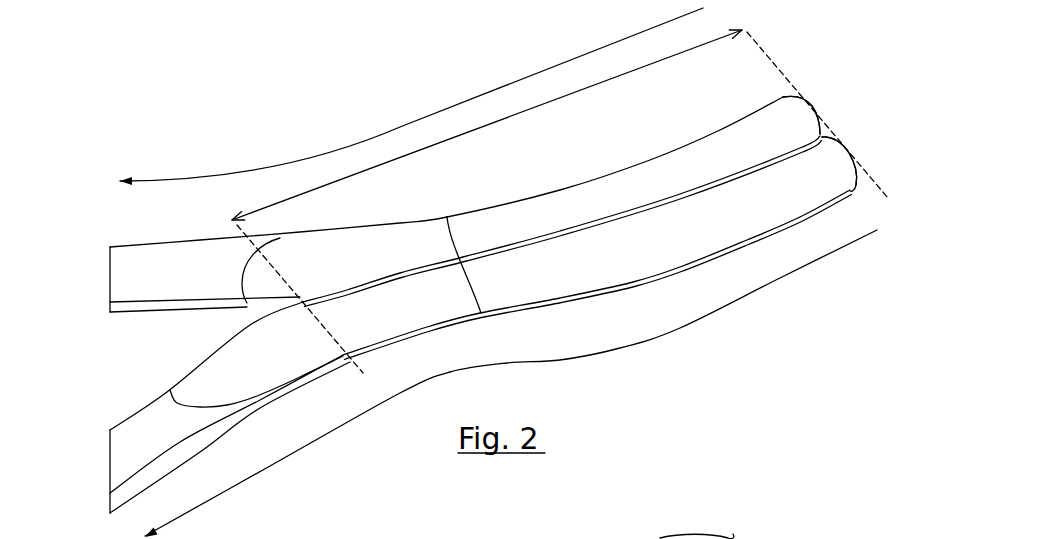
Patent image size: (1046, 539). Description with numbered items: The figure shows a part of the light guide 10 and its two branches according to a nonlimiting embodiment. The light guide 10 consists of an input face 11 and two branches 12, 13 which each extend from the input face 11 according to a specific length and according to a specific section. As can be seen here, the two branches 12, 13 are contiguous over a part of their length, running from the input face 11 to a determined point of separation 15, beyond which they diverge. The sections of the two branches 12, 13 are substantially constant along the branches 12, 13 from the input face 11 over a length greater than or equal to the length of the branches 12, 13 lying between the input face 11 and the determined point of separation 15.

The light guide 10 is at (223, 110).
The input face 11 is at (850, 152).
The branch 12 is at (640, 195).
The branch 13 is at (633, 255).
The point of separation 15 is at (307, 297).